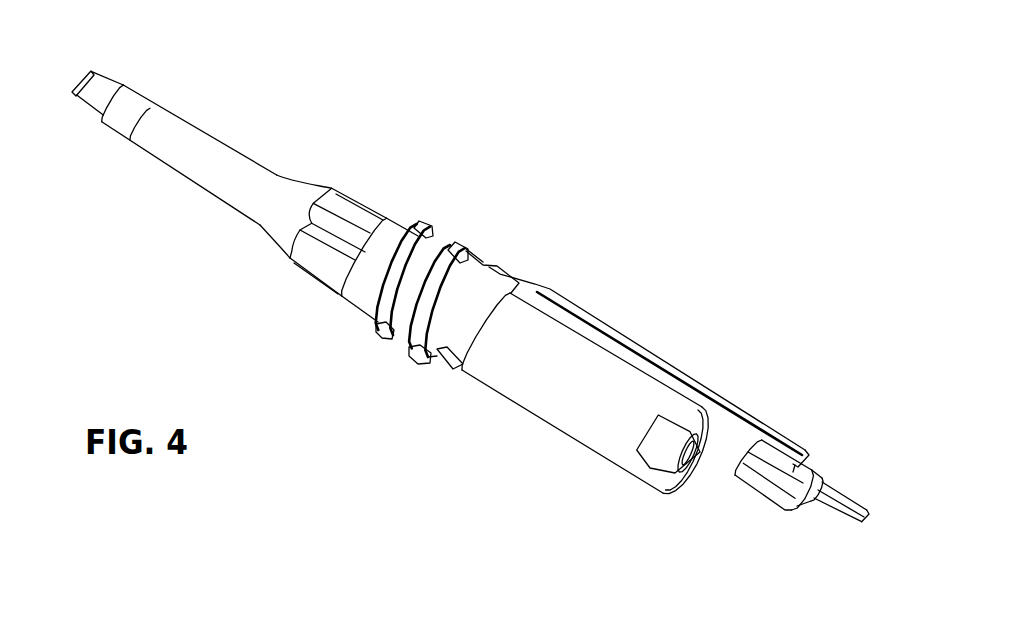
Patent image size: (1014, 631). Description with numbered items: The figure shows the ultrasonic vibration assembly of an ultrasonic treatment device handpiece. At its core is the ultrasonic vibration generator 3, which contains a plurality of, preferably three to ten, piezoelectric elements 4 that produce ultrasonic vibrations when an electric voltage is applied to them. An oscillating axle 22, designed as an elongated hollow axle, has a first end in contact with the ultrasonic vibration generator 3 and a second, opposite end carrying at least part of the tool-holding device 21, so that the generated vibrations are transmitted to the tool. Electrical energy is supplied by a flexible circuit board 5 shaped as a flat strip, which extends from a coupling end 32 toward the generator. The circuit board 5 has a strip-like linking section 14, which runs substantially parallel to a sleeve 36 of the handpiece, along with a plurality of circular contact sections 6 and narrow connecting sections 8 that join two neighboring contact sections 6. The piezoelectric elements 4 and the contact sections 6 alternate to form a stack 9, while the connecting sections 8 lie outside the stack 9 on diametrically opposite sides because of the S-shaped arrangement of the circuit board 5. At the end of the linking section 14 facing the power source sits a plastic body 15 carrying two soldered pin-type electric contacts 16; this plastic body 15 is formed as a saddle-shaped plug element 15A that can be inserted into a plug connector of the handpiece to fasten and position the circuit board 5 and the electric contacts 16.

The ultrasonic vibration generator 3 is at (533, 232).
The piezoelectric element 4 is at (465, 272).
The circuit board 5 is at (620, 287).
The contact section 6 is at (358, 316).
The connecting section 8 is at (431, 221).
The stack 9 is at (422, 382).
The linking section 14 is at (685, 378).
The plastic body 15 is at (748, 507).
The plug element 15A is at (752, 508).
The electric contact 16 is at (857, 477).
The tool-holding device 21 is at (64, 72).
The oscillating axle 22 is at (230, 123).
The coupling end 32 is at (852, 548).
The sleeve 36 is at (571, 391).